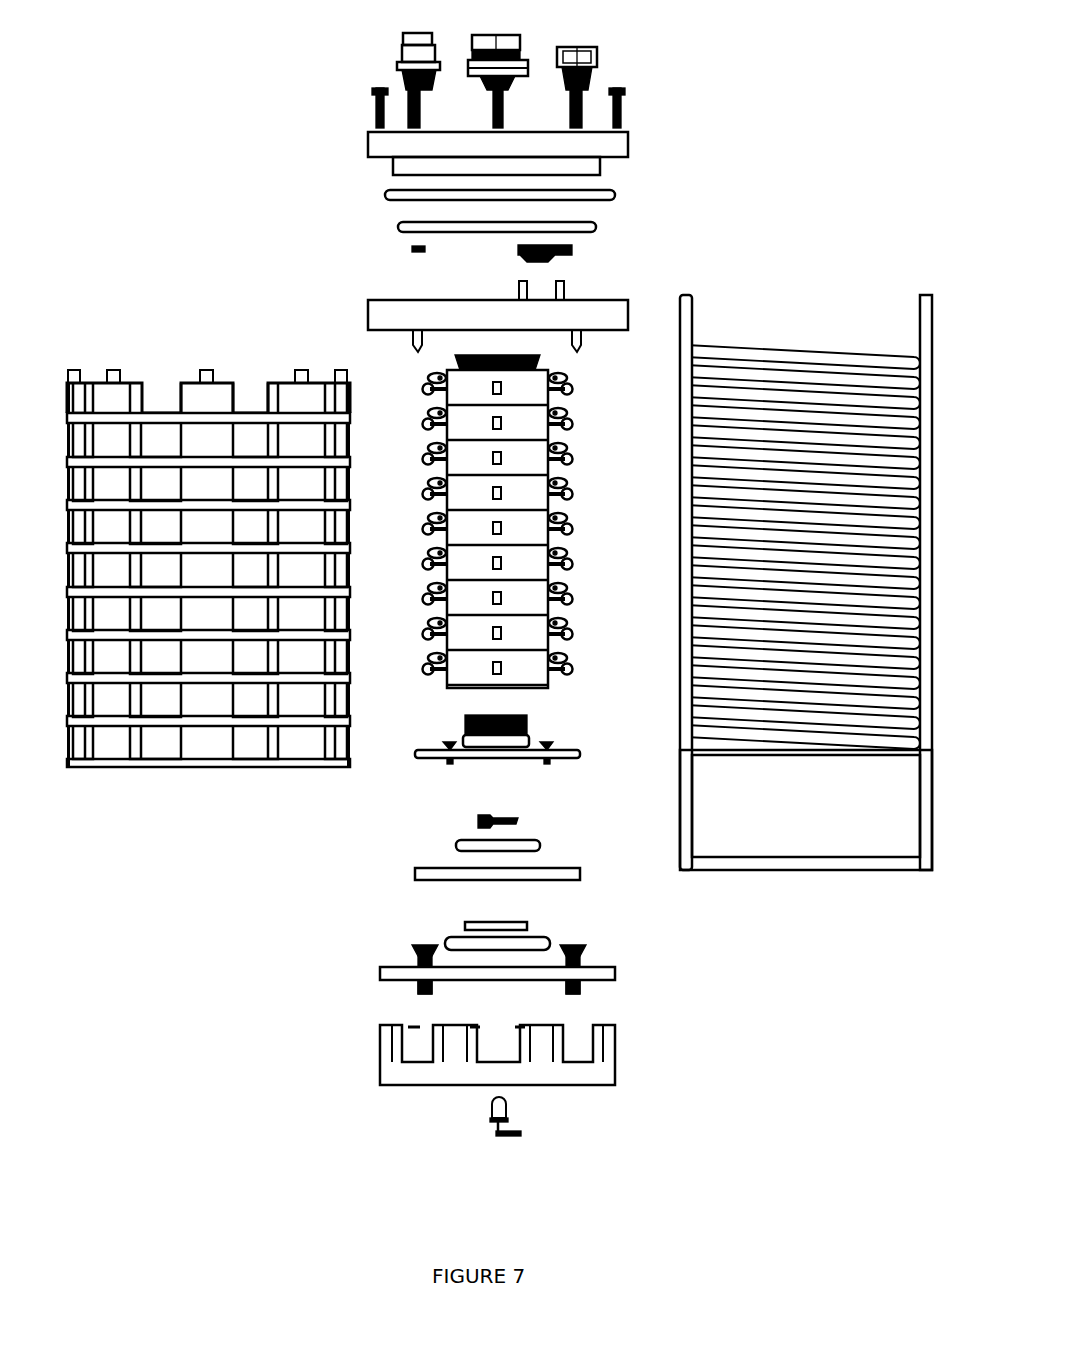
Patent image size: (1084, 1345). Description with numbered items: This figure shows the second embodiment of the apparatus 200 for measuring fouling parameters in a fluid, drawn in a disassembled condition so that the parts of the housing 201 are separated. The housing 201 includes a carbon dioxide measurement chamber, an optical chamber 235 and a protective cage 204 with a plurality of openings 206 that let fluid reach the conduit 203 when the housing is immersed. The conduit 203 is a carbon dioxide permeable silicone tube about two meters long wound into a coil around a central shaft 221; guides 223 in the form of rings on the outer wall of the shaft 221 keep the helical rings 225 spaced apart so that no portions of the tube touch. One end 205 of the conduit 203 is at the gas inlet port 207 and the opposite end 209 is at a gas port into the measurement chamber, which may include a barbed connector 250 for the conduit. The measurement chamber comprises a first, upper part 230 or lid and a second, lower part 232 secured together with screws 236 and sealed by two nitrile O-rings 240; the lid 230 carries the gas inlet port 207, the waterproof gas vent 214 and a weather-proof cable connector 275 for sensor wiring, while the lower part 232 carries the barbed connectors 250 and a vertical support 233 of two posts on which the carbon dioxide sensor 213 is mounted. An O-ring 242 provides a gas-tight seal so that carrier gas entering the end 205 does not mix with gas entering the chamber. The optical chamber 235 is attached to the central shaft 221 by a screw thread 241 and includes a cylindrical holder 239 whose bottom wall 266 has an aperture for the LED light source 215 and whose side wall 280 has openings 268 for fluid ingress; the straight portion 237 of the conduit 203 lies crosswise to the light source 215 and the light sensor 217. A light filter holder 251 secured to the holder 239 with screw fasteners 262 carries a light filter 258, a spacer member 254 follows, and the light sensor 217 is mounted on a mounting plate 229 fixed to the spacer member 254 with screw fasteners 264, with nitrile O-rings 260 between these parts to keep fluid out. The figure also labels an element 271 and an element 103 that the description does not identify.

The apparatus 200 is at (233, 145).
The housing 201 is at (320, 195).
The conduit 203 is at (800, 547).
The protective cage 204 is at (208, 576).
The end of conduit 205 is at (690, 295).
The openings 206 is at (251, 485).
The gas inlet port 207 is at (415, 53).
The opposite end of conduit 209 is at (926, 298).
The carbon dioxide sensor 213 is at (565, 249).
The gas vent 214 is at (592, 52).
The light source 215 is at (506, 1108).
The light sensor 217 is at (476, 820).
The central shaft 221 is at (533, 529).
The guides 223 is at (548, 482).
The helical rings 225 is at (818, 748).
The mounting plate 229 is at (510, 758).
The first part 230 is at (608, 150).
The second part 232 is at (598, 320).
The vertical support 233 is at (566, 286).
The optical chamber 235 is at (718, 952).
The screws 236 is at (492, 112).
The straight portion of conduit 237 is at (836, 873).
The holder 239 is at (495, 1078).
The O-rings 240 is at (577, 225).
The screw thread 241 is at (530, 724).
The O-ring 242 is at (410, 249).
The barbed connector 250 is at (410, 341).
The light filter holder 251 is at (598, 972).
The spacer member 254 is at (555, 875).
The light filter 258 is at (465, 923).
The O-rings 260 is at (455, 845).
The screw fasteners 262 is at (418, 955).
The screw fasteners 264 is at (444, 746).
The bottom wall 266 is at (425, 1085).
The openings 268 is at (600, 1052).
The top connector 271 is at (540, 368).
The cable connector 275 is at (500, 45).
The side wall 280 is at (415, 1045).
The cell 103 is at (523, 444).